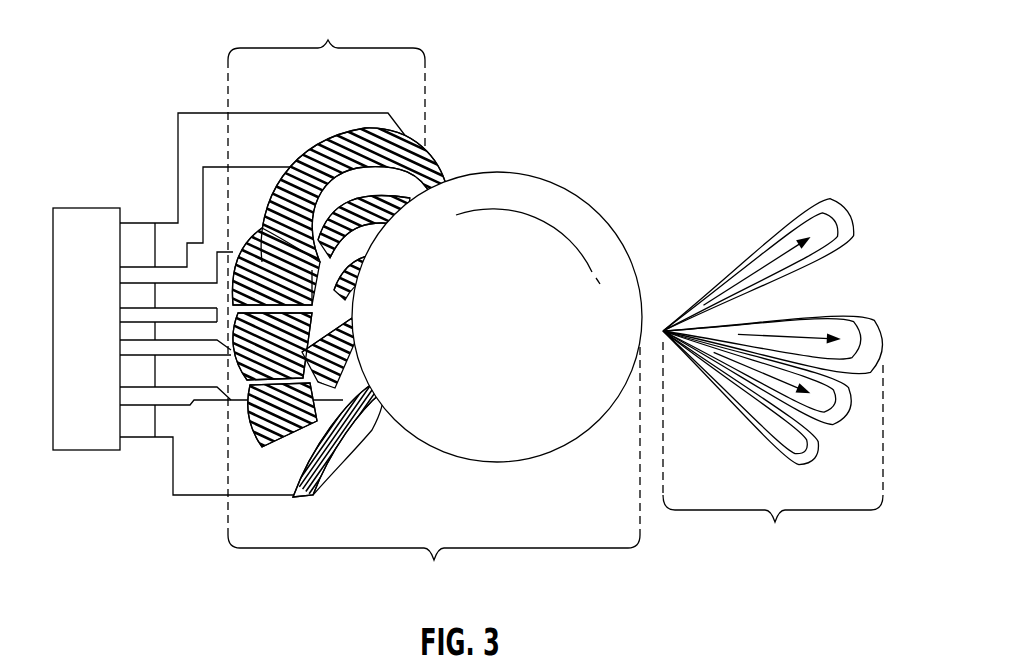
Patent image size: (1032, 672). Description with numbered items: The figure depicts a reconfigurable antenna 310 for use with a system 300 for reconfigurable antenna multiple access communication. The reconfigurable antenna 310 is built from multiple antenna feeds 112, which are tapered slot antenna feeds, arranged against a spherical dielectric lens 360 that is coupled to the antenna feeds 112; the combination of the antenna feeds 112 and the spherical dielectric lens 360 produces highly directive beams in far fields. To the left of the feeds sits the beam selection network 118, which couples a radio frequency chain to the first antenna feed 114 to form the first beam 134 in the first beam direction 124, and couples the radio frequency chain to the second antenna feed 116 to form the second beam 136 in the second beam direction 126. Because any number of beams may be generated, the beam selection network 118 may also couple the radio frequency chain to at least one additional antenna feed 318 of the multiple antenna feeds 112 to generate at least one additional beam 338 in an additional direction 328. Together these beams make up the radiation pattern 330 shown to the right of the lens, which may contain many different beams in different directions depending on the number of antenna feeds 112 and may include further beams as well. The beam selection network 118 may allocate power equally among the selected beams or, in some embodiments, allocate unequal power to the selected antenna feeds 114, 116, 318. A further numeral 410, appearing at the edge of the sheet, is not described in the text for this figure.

The system for reconfigurable antenna multiple access communication 300 is at (109, 37).
The multiple antenna feeds 112 is at (370, 336).
The first antenna feed 114 is at (313, 132).
The second antenna feed 116 is at (292, 480).
The beam selection network 118 is at (87, 207).
The additional antenna feed 318 is at (242, 322).
The spherical dielectric lens 360 is at (577, 200).
The reconfigurable antenna 310 is at (434, 474).
The radiation pattern 330 is at (791, 368).
The second beam 136 is at (838, 206).
The second beam direction 126 is at (760, 268).
The additional direction 328 is at (838, 302).
The additional beam 338 is at (858, 332).
The first beam 134 is at (832, 425).
The first beam direction 124 is at (752, 378).
The component 410 is at (64, 663).